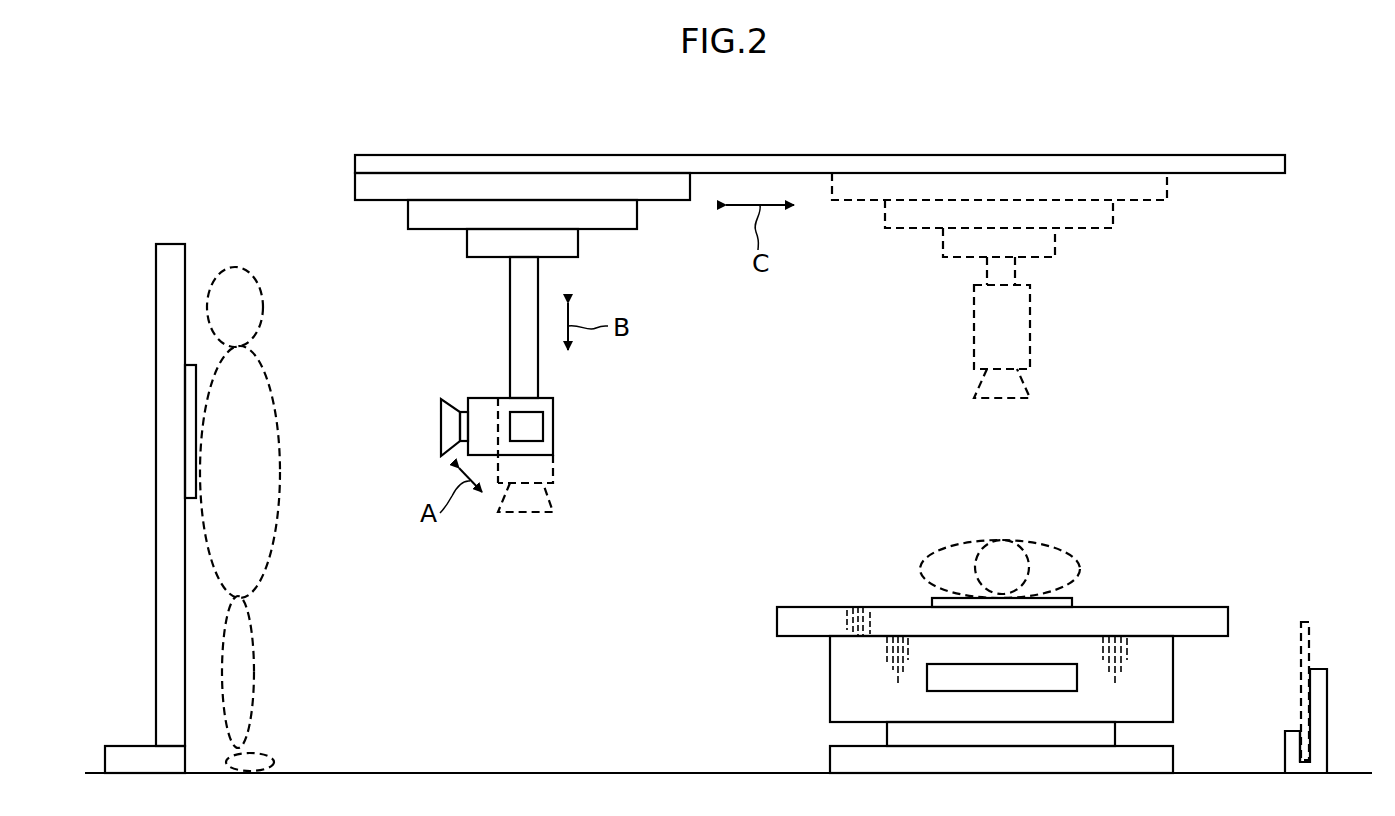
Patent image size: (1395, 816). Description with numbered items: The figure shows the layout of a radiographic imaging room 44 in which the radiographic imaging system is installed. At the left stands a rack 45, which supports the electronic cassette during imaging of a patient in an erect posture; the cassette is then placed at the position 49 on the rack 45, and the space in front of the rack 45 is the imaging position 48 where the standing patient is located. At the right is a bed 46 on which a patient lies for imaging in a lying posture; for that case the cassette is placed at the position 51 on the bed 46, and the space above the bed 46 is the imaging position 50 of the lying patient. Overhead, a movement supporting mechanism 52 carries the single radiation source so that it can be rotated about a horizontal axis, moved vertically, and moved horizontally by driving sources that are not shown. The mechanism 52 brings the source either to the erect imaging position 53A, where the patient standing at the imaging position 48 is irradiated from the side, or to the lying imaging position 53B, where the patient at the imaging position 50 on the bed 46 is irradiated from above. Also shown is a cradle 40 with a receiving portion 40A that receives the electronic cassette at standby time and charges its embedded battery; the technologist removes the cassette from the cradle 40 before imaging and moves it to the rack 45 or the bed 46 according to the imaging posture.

The radiographic imaging room 44 is at (799, 460).
The rack 45 is at (172, 243).
The position supported by the rack 49 is at (190, 366).
The imaging position 48 is at (240, 268).
The movement supporting mechanism 52 is at (364, 188).
The erect imaging position 53A is at (545, 425).
The lying imaging position 53B is at (1030, 312).
The bed 46 is at (777, 624).
The position on the bed 51 is at (1075, 601).
The imaging position 50 is at (1080, 560).
The cradle 40 is at (1327, 735).
The receiving portion 40A is at (1296, 730).